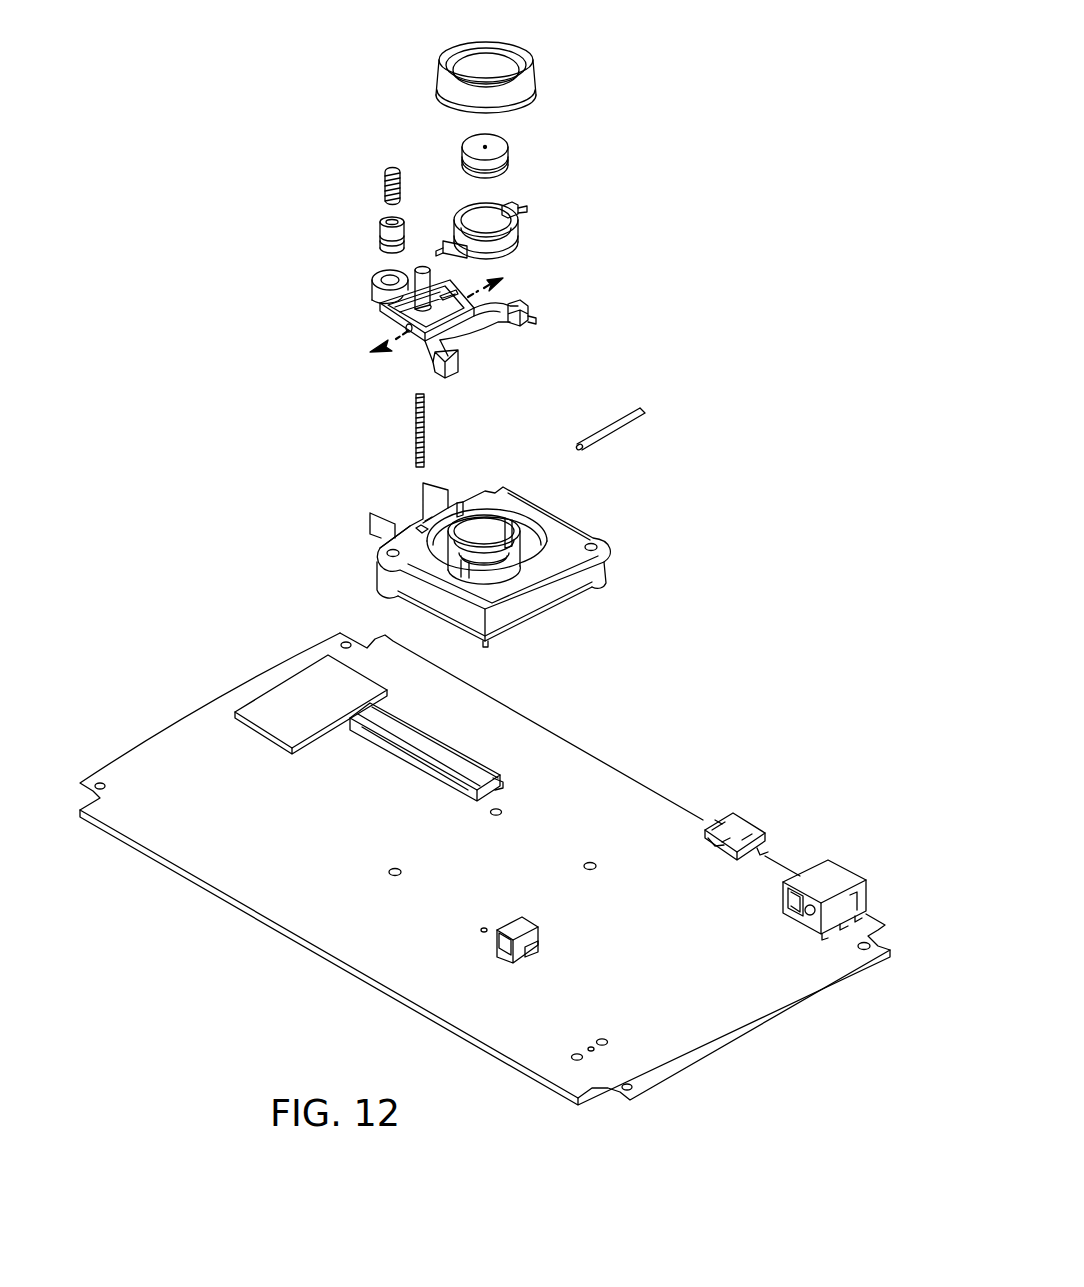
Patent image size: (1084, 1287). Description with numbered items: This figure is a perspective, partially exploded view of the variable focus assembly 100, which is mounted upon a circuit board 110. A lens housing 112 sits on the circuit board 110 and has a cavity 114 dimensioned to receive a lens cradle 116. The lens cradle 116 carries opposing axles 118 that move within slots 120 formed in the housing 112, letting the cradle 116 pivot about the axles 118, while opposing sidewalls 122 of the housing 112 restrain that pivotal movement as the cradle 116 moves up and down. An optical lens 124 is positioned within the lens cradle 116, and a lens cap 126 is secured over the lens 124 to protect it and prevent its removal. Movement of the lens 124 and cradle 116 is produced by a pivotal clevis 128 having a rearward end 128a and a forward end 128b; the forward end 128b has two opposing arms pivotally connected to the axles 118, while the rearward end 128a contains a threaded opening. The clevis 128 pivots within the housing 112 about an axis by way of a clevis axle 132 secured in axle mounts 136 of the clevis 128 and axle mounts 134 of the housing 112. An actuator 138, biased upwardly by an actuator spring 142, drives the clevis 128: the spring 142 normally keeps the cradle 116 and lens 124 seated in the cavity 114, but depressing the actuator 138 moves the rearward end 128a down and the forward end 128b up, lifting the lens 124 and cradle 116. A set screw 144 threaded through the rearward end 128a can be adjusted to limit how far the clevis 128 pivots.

The variable focus assembly 100 is at (676, 200).
The circuit board 110 is at (631, 780).
The lens housing 112 is at (491, 540).
The cavity 114 is at (483, 537).
The lens cradle 116 is at (507, 247).
The axles 118 is at (527, 209).
The slots 120 is at (511, 527).
The sidewalls 122 is at (507, 562).
The optical lens 124 is at (510, 152).
The lens cap 126 is at (530, 88).
The clevis 128 is at (456, 345).
The rearward end 128a is at (373, 285).
The forward end 128b is at (526, 330).
The clevis axle 132 is at (646, 408).
The axle mounts 134 is at (461, 500).
The axle mounts 136 is at (410, 331).
The actuator 138 is at (420, 298).
The actuator spring 142 is at (425, 400).
The set screw 144 is at (384, 184).